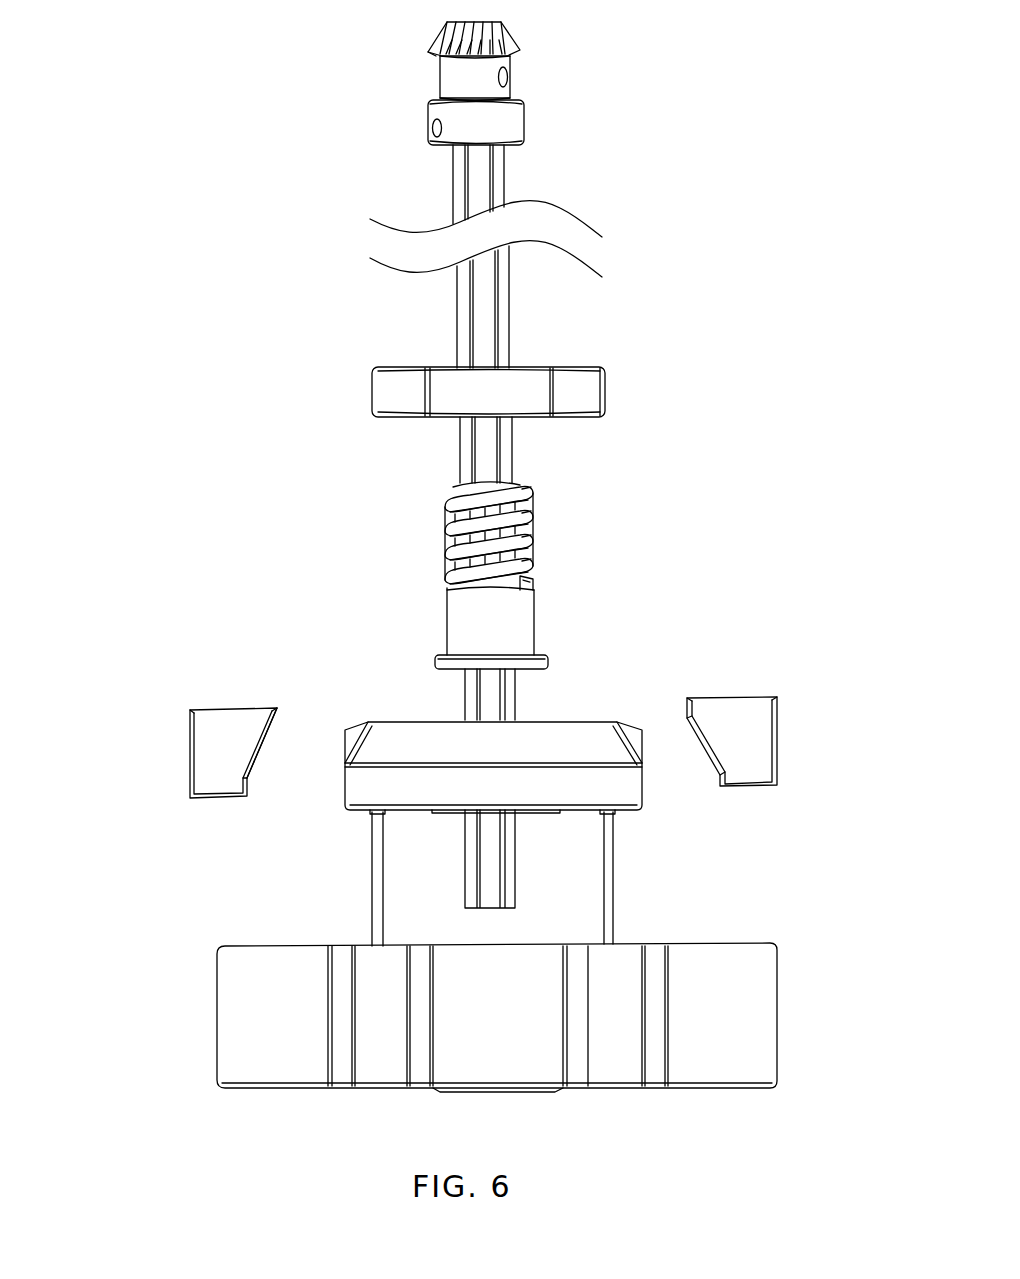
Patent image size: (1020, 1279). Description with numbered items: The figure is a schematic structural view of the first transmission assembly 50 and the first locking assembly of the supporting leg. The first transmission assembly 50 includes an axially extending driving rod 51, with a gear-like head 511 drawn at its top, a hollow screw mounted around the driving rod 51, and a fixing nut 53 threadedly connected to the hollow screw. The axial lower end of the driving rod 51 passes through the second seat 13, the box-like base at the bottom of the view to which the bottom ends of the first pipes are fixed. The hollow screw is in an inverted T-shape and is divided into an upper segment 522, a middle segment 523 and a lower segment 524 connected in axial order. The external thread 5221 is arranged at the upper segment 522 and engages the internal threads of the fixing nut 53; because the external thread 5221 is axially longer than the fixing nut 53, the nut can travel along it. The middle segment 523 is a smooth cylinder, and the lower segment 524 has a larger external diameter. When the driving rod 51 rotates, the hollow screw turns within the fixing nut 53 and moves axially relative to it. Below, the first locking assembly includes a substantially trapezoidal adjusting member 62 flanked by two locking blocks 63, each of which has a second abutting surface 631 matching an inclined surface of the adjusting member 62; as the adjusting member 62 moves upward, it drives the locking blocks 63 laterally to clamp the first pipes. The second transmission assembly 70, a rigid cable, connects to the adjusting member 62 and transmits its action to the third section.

The bevel gear 511 is at (428, 34).
The driving rod 51 is at (493, 180).
The first transmission assembly 50 is at (657, 382).
The fixing nut 53 is at (386, 390).
The upper segment 522 is at (445, 503).
The external thread 5221 is at (540, 533).
The middle segment 523 is at (455, 606).
The lower segment 524 is at (440, 660).
The adjusting member 62 is at (575, 720).
The locking block 63 is at (190, 748).
The second abutting surface 631 is at (253, 767).
The second transmission assembly 70 is at (608, 900).
The second seat 13 is at (745, 1025).